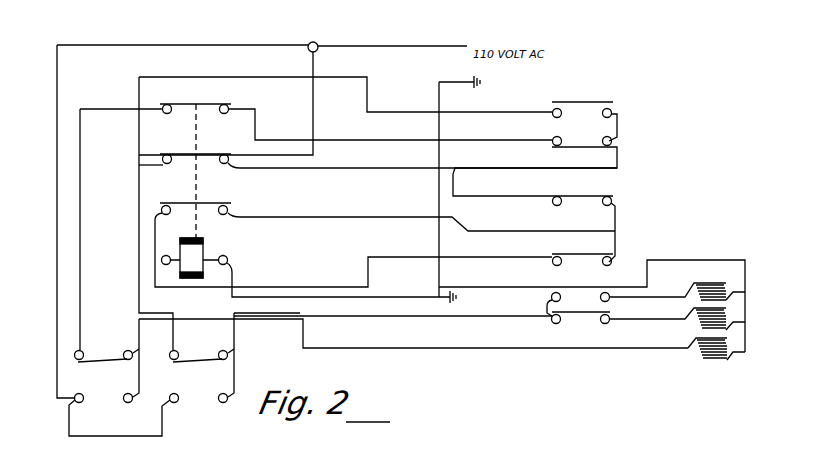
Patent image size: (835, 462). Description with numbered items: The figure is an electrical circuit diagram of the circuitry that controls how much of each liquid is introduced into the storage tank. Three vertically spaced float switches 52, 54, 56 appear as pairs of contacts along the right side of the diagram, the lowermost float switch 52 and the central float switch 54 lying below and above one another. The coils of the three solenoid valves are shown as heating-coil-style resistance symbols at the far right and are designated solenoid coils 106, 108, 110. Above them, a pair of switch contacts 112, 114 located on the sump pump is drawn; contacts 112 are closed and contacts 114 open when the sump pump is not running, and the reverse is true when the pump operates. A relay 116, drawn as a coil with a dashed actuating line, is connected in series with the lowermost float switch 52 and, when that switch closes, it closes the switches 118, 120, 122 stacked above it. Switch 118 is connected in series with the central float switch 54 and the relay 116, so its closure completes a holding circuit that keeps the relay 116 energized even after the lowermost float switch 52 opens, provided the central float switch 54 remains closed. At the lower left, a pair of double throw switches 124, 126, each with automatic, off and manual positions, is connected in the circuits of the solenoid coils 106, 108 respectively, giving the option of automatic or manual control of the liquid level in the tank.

The lowermost float switch 52 is at (591, 254).
The central float switch 54 is at (600, 196).
The float switch 56 is at (595, 311).
The solenoid coil 106 is at (701, 310).
The solenoid coil 108 is at (702, 356).
The solenoid coil 110 is at (718, 281).
The switch contacts 112 is at (588, 149).
The switch contacts 114 is at (579, 102).
The relay 116 is at (193, 254).
The switch 118 is at (192, 203).
The switch 120 is at (214, 163).
The switch 122 is at (201, 104).
The double throw switch 124 is at (222, 360).
The double throw switch 126 is at (78, 362).